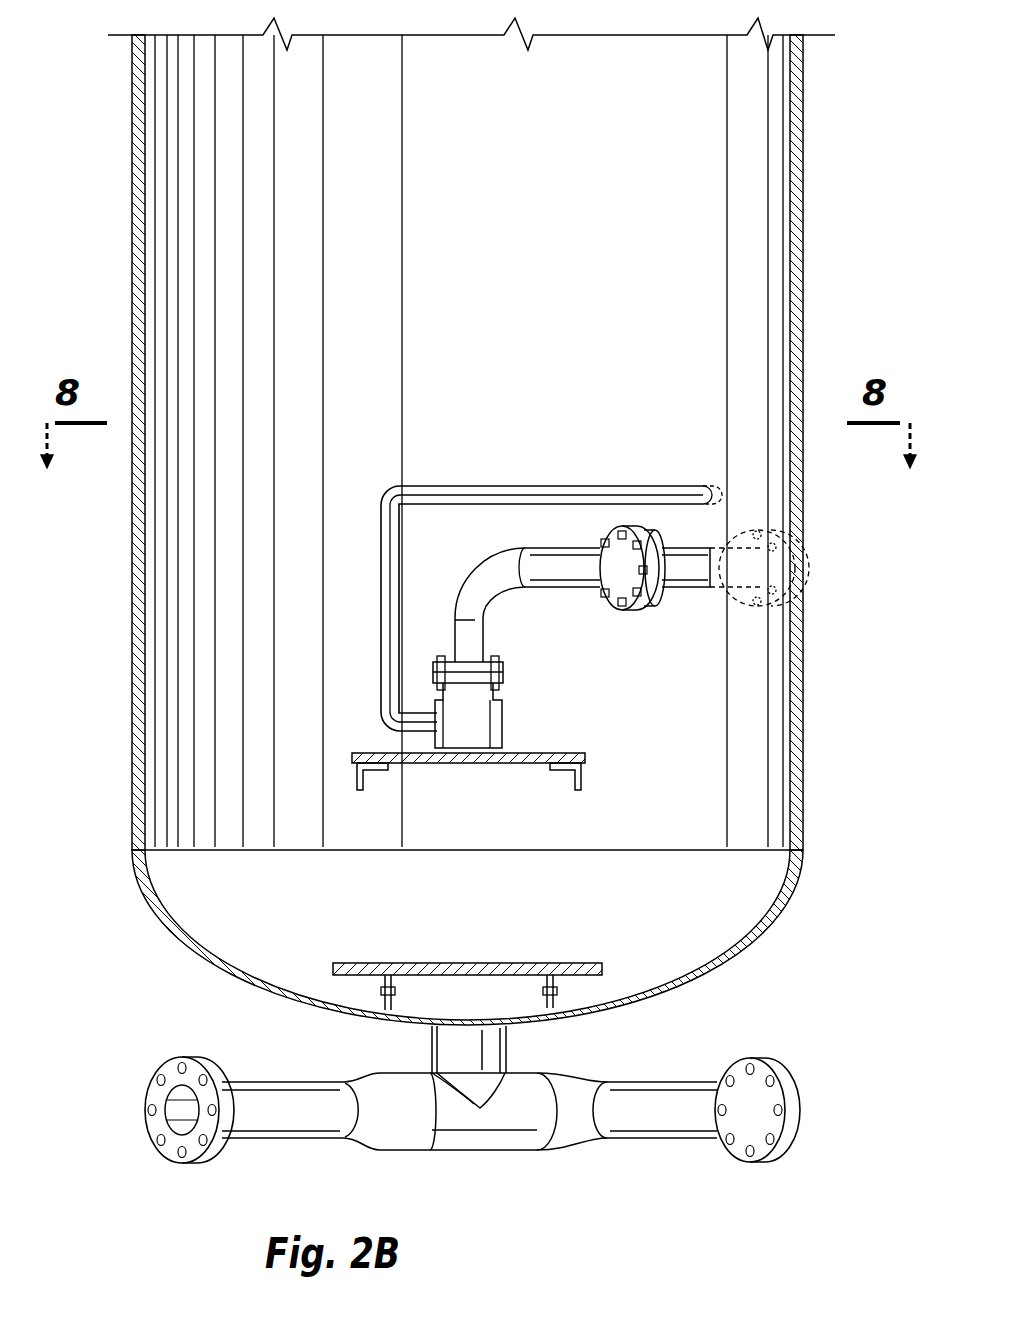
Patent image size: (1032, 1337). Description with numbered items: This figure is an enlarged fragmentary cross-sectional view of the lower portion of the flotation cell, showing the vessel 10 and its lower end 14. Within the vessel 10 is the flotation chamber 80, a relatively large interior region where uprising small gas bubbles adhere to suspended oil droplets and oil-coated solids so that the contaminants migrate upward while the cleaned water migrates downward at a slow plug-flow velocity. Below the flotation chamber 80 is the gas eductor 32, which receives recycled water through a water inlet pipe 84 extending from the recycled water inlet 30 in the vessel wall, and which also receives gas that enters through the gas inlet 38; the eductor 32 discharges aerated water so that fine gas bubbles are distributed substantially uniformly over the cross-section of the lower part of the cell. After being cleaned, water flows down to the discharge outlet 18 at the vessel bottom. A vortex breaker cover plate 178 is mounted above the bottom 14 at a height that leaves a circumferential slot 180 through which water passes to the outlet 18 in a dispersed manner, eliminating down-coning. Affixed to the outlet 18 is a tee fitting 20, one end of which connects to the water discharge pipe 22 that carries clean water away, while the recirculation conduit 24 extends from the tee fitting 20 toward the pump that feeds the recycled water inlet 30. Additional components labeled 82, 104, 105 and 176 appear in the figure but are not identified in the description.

The vessel 10 is at (800, 276).
The lower end of vessel 14 is at (650, 1002).
The discharge outlet 18 is at (493, 1053).
The tee or branch fitting 20 is at (642, 1127).
The water discharge pipe 22 is at (268, 1128).
The recirculation conduit 24 is at (478, 1138).
The recycled water inlet 30 is at (790, 528).
The gas eductor 32 is at (518, 712).
The gas inlet 38 is at (723, 495).
The flotation chamber 80 is at (743, 103).
The liner layer 82 is at (305, 624).
The water inlet pipe 84 is at (553, 582).
The support plate 104 is at (537, 750).
The clips 105 is at (357, 776).
The liner layer 176 is at (260, 474).
The vortex breaker cover plate 178 is at (375, 960).
The circumferential slot 180 is at (607, 987).